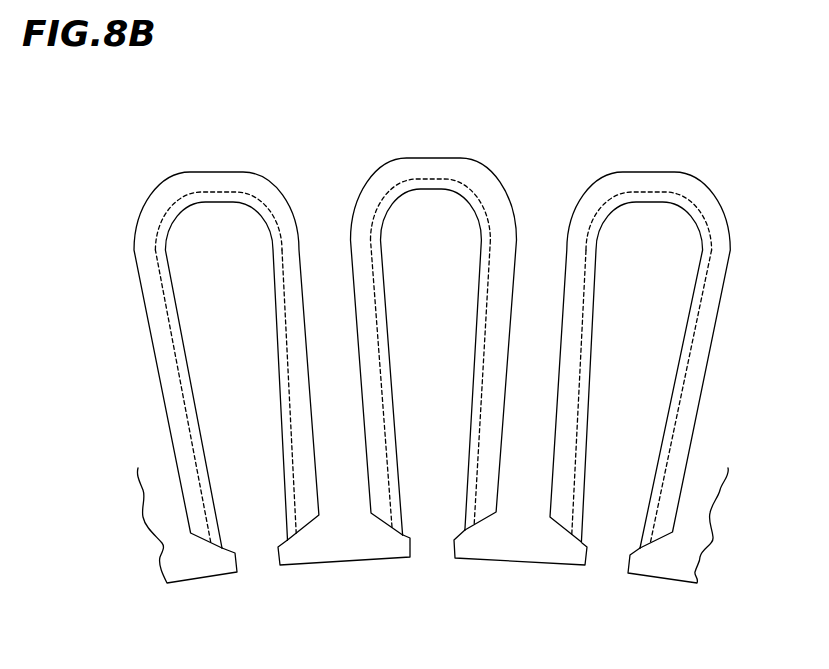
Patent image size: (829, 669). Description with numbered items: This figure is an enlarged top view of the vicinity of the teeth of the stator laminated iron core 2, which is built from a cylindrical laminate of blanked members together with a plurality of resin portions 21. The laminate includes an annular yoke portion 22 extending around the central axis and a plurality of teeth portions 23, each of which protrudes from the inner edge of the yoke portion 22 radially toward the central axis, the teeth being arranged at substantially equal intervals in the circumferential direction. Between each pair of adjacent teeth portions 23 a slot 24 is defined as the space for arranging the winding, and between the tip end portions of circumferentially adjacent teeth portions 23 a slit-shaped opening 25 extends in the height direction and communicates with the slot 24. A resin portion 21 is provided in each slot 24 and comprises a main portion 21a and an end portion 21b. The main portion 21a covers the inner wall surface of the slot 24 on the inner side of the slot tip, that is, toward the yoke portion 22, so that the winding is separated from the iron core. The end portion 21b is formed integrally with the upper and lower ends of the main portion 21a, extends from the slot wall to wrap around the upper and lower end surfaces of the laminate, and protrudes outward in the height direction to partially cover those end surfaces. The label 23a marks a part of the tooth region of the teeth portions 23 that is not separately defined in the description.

The stator laminated iron core 2 is at (145, 150).
The resin portion 21 is at (132, 212).
The main portion 21a is at (185, 385).
The end portion 21b is at (158, 329).
The yoke portion 22 is at (707, 138).
The teeth portion 23 is at (168, 558).
The leg portion 23a is at (540, 293).
The slot 24 is at (218, 232).
The opening 25 is at (257, 565).